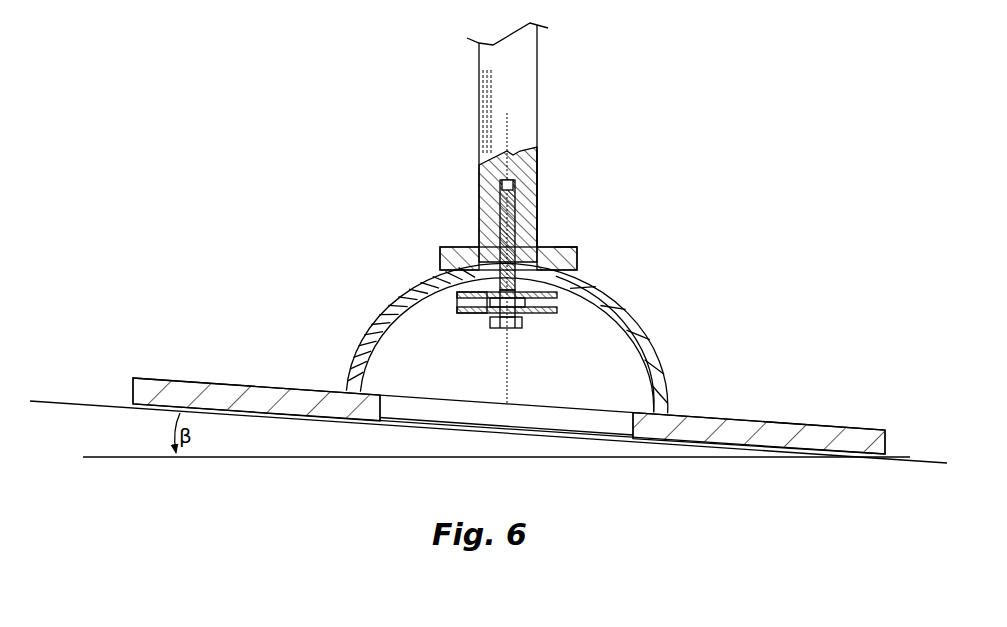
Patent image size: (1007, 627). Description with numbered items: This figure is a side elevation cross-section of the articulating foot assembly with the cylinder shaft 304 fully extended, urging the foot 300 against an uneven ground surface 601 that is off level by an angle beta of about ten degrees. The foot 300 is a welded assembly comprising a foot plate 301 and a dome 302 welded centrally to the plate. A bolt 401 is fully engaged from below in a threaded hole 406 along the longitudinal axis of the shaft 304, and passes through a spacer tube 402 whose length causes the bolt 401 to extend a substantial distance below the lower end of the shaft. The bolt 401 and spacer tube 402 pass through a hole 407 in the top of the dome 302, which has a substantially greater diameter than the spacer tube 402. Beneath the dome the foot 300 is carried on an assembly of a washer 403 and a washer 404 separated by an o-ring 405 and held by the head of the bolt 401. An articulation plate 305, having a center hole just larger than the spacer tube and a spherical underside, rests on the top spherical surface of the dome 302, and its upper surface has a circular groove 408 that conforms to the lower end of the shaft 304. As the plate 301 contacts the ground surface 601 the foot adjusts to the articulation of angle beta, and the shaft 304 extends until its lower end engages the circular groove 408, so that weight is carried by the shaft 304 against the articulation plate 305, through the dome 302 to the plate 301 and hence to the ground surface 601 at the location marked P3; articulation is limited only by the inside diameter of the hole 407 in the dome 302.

The foot 300 is at (495, 325).
The foot plate 301 is at (703, 432).
The dome 302 is at (597, 285).
The cylinder shaft 304 is at (525, 68).
The articulation plate 305 is at (457, 246).
The bolt 401 is at (512, 335).
The spacer tube 402 is at (492, 318).
The washer 403 is at (548, 313).
The washer 404 is at (533, 320).
The o-ring 405 is at (455, 298).
The threaded hole 406 is at (478, 176).
The hole 407 is at (559, 248).
The circular groove 408 is at (538, 208).
The ground surface 601 is at (48, 397).
The pivot point P3 is at (468, 228).